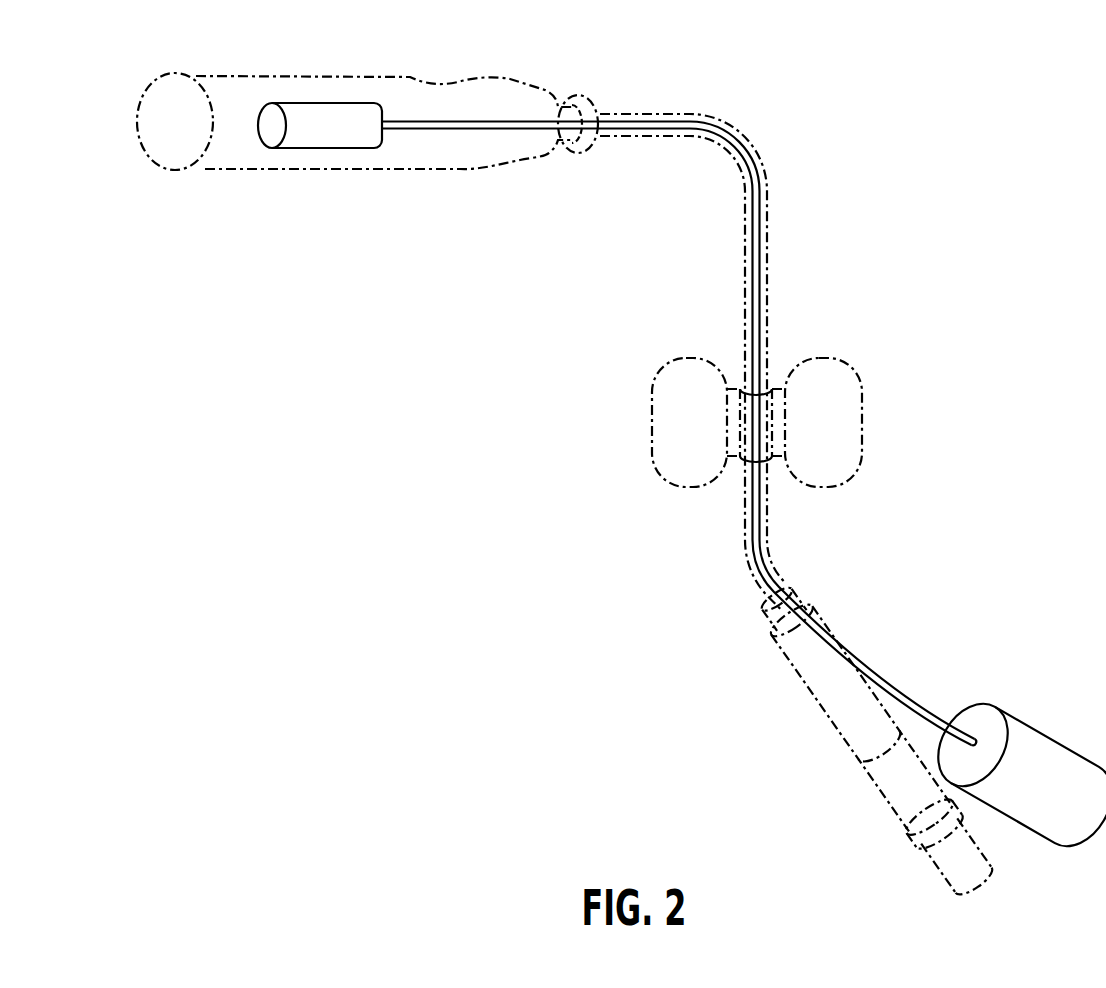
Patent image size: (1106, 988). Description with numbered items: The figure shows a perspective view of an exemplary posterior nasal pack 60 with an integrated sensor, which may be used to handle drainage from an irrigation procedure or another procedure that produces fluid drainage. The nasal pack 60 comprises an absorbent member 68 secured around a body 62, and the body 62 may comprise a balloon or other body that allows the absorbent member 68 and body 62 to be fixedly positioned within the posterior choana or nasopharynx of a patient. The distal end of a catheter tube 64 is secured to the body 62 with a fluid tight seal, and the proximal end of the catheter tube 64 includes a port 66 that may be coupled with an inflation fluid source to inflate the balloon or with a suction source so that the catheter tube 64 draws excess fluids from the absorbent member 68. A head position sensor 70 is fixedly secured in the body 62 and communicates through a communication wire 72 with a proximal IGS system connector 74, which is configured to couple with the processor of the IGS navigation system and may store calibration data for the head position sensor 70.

The posterior nasal pack 60 is at (1013, 198).
The body 62 is at (174, 169).
The catheter tube 64 is at (769, 185).
The port 66 is at (882, 793).
The absorbent member 68 is at (520, 86).
The head position sensor 70 is at (338, 137).
The communication wire 72 is at (755, 561).
The IGS system connector 74 is at (1059, 740).